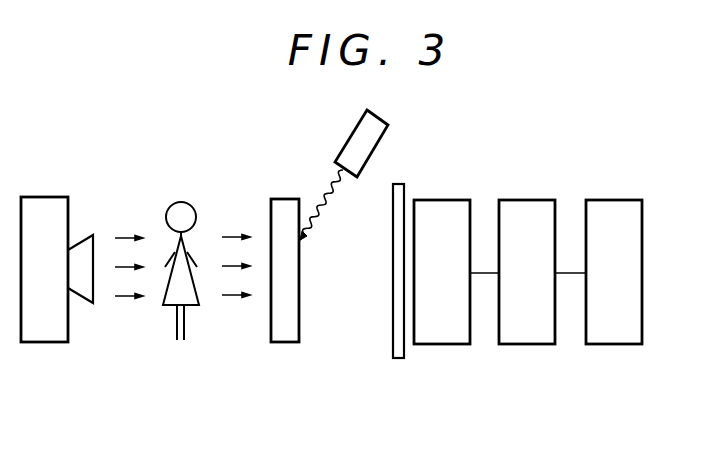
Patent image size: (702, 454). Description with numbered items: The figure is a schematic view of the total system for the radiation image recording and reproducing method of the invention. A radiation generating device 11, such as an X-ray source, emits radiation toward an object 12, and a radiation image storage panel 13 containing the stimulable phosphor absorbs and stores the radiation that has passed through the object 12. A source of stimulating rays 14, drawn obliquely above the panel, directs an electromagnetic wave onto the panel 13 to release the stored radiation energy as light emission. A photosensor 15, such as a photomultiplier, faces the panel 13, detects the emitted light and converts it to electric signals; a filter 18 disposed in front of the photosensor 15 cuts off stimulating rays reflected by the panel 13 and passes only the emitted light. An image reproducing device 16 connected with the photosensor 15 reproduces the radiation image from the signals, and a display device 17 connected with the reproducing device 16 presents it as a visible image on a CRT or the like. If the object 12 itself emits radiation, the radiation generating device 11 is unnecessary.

The radiation generating device 11 is at (47, 333).
The object 12 is at (177, 327).
The radiation image storage panel 13 is at (288, 333).
The source of stimulating rays 14 is at (377, 130).
The photosensor 15 is at (450, 335).
The image reproducing device 16 is at (535, 335).
The display device 17 is at (620, 335).
The filter 18 is at (392, 332).